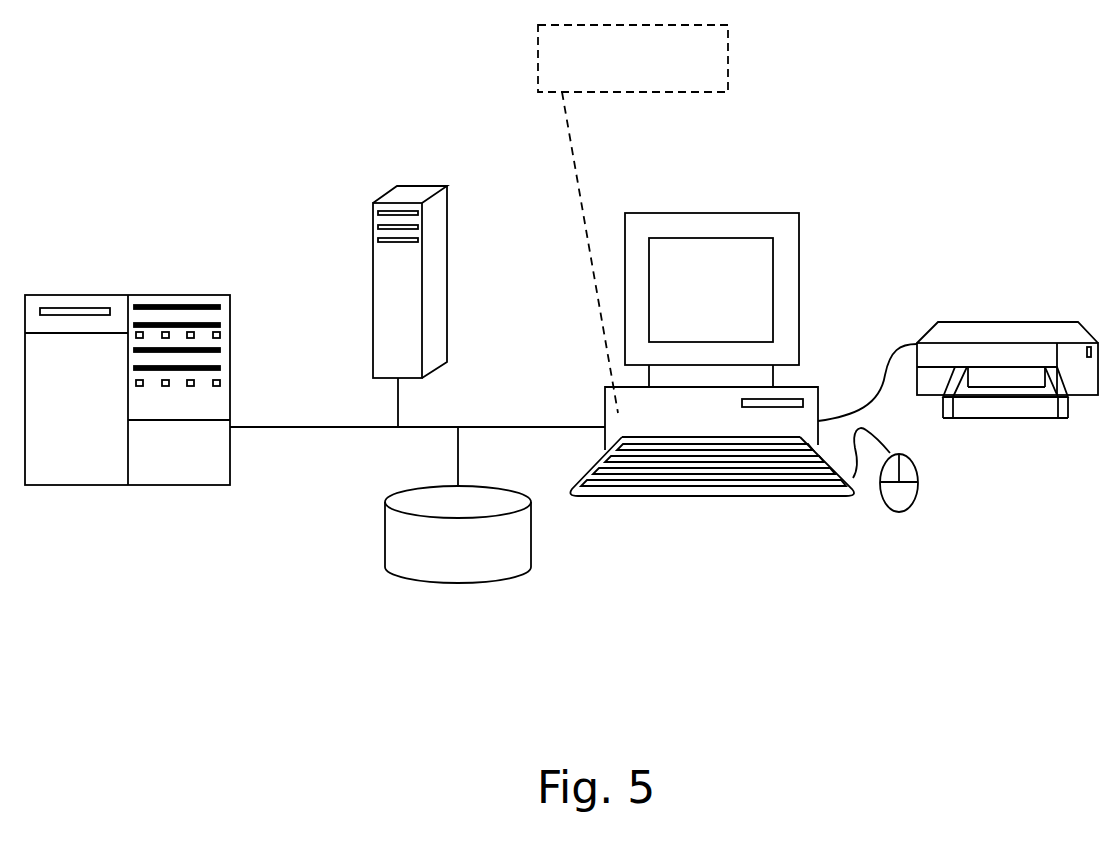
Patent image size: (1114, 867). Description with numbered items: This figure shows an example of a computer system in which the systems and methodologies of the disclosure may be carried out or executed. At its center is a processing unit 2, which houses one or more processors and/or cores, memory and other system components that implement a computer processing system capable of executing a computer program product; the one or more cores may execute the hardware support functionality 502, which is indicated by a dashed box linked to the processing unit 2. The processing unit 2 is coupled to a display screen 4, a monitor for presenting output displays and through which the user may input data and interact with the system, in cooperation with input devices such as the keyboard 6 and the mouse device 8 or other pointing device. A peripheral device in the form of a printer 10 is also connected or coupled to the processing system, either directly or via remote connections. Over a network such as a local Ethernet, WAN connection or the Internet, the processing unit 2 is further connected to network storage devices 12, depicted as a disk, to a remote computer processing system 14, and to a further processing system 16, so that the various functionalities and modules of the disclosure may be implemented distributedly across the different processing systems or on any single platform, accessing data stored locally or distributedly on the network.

The processing unit 2 is at (607, 410).
The display screen 4 is at (799, 286).
The keyboard 6 is at (767, 497).
The mouse device 8 is at (918, 498).
The printer 10 is at (1007, 322).
The network storage devices 12 is at (473, 582).
The remote computer processing system 14 is at (448, 272).
The processing system 16 is at (170, 295).
The hardware support functionality 502 is at (713, 70).